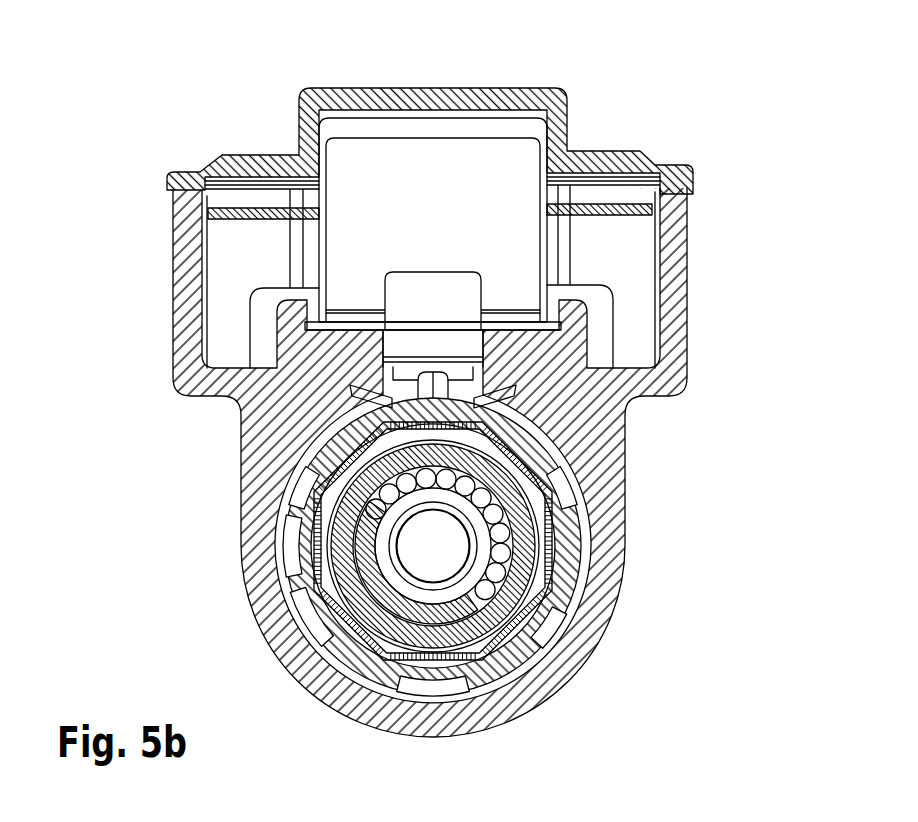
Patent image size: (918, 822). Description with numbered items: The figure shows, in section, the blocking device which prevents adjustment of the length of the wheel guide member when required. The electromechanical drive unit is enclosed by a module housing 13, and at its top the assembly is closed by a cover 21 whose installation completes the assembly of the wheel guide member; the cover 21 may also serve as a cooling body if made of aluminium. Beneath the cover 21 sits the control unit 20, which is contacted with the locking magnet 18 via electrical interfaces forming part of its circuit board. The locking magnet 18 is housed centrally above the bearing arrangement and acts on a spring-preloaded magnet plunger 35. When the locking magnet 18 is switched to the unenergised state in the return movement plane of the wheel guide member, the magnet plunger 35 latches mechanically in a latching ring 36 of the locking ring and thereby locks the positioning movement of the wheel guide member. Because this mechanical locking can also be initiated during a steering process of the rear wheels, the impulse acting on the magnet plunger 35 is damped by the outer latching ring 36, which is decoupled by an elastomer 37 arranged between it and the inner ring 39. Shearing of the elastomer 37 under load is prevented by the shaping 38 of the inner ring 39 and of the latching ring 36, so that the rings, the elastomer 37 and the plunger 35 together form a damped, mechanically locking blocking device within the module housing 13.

The module housing 13 is at (258, 442).
The locking magnet 18 is at (433, 172).
The control unit 20 is at (240, 219).
The cover 21 is at (605, 152).
The magnet plunger 35 is at (440, 383).
The latching ring 36 is at (567, 480).
The elastomer 37 is at (536, 541).
The shaping 38 is at (550, 550).
The inner ring 39 is at (527, 643).